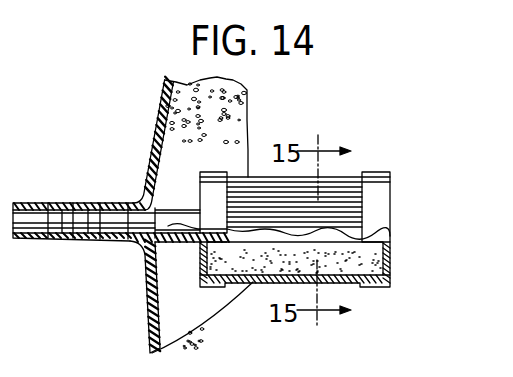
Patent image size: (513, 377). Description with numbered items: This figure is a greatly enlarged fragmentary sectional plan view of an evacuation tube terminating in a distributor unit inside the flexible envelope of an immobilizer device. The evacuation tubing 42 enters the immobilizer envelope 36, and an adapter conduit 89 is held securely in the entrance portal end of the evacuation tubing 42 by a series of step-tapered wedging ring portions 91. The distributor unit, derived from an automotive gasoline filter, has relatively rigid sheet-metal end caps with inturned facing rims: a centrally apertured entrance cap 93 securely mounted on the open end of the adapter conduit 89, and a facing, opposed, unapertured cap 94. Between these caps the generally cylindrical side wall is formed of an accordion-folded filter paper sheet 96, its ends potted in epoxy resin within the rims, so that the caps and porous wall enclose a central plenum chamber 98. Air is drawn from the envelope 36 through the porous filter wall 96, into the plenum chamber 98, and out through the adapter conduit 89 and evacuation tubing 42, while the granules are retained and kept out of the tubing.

The immobilizer envelope 36 is at (165, 93).
The evacuation tubing 42 is at (42, 205).
The step-tapered wedging ring portions 91 is at (89, 215).
The adapter conduit 89 is at (187, 215).
The unapertured cap 94 is at (375, 197).
The central plenum chamber 98 is at (347, 222).
The entrance cap 93 is at (200, 268).
The accordion-folded filter paper sheet 96 is at (348, 267).